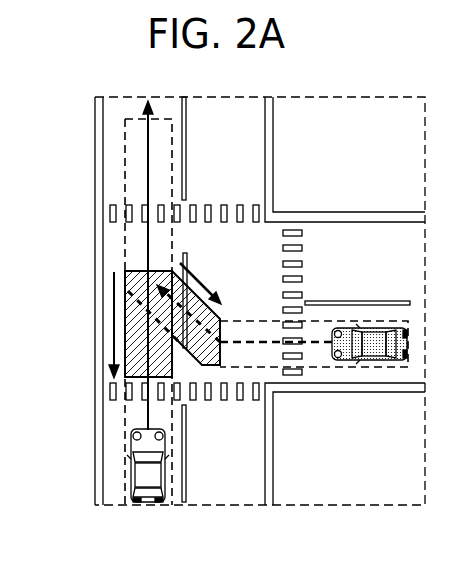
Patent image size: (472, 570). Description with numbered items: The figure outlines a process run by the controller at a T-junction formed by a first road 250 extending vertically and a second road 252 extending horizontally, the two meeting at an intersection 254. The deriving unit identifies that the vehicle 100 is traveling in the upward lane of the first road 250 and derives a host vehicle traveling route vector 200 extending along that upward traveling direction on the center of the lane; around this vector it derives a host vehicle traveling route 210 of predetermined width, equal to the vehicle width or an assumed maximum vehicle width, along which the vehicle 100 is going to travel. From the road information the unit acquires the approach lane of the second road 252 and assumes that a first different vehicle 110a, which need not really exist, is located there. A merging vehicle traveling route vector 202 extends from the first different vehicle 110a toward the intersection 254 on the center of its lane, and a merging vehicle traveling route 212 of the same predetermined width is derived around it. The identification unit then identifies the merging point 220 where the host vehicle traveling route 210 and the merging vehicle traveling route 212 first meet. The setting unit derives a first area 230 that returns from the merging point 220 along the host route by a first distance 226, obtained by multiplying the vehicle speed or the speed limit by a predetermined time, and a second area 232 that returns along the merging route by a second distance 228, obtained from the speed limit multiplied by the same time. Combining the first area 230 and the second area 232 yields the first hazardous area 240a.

The vehicle 100 is at (130, 468).
The first different vehicle 110a is at (370, 363).
The host vehicle traveling route vector 200 is at (126, 120).
The merging vehicle traveling route vector 202 is at (263, 340).
The host vehicle traveling route 210 is at (125, 163).
The merging vehicle traveling route 212 is at (333, 319).
The merging point 220 is at (125, 268).
The first distance 226 is at (113, 330).
The second distance 228 is at (204, 276).
The first area 230 is at (161, 364).
The second area 232 is at (212, 349).
The first hazardous area 240a is at (163, 272).
The first road 250 is at (253, 478).
The second road 252 is at (344, 235).
The intersection 254 is at (111, 236).